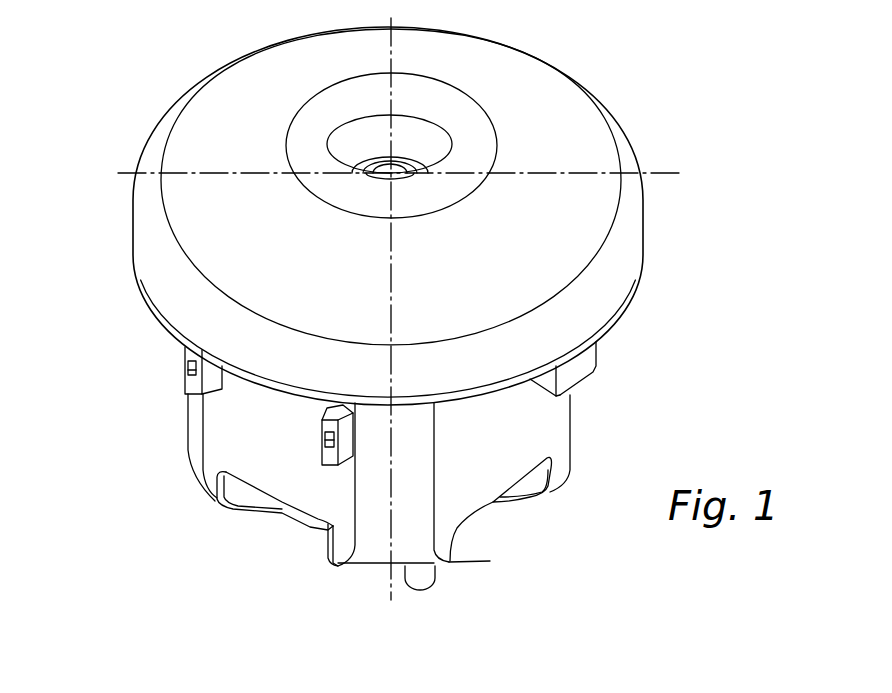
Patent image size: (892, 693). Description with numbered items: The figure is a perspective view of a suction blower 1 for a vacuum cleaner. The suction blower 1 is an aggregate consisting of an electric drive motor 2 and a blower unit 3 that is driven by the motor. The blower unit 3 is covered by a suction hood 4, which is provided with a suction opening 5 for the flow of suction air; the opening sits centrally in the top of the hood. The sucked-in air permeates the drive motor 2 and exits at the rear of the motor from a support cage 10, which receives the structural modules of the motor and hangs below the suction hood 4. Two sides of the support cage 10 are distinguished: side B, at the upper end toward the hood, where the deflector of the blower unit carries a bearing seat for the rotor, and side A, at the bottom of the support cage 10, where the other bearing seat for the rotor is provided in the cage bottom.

The suction blower 1 is at (531, 286).
The electric drive motor 2 is at (268, 546).
The blower unit 3 is at (108, 233).
The suction hood 4 is at (627, 242).
The suction opening 5 is at (347, 145).
The support cage 10 is at (192, 438).
The side A of the support cage A is at (490, 561).
The side B of the support cage B is at (612, 328).